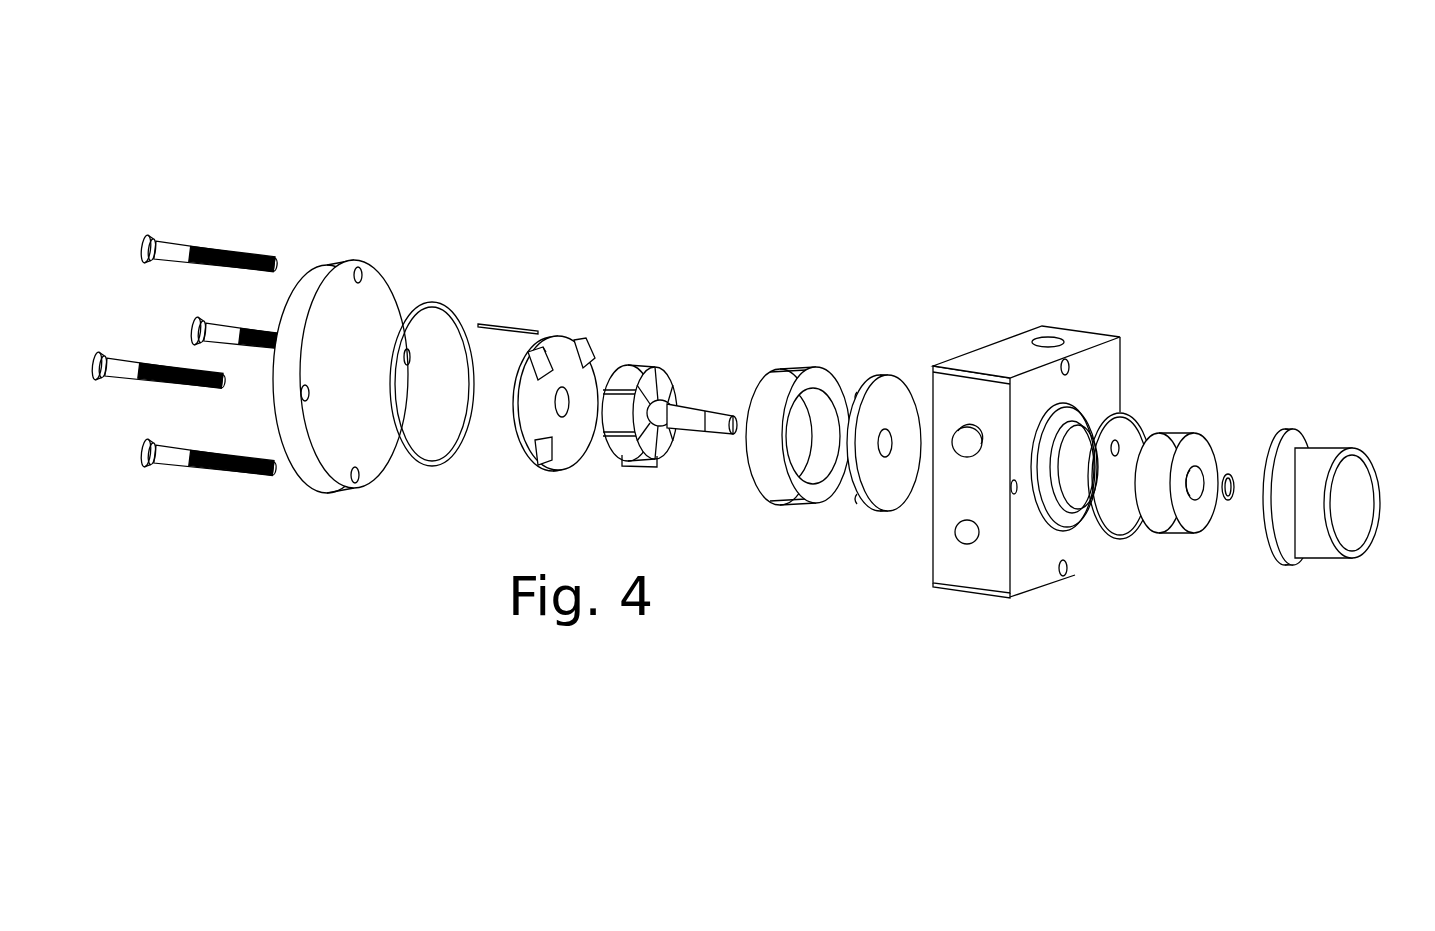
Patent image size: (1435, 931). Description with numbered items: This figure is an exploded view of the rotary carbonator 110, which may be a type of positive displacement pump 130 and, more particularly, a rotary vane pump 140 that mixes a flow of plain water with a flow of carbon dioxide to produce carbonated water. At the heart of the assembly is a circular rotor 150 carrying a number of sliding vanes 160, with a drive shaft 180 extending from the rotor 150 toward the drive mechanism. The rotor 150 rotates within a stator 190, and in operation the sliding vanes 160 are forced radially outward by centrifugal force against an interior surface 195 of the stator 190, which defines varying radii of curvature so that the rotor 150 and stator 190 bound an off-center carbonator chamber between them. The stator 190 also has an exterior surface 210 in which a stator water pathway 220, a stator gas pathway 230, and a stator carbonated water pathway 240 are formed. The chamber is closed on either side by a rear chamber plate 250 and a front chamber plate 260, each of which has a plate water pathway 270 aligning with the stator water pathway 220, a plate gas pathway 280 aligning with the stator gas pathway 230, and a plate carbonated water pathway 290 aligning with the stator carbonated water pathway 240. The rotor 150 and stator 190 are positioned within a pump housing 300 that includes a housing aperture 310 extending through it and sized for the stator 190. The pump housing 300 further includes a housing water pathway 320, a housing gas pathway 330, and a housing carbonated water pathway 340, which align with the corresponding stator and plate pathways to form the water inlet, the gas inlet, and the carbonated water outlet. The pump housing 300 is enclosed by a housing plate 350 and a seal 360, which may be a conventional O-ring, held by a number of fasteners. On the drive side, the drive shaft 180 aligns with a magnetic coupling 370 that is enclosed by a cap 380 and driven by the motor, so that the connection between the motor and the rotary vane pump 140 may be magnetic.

The rotary carbonator 110 is at (322, 144).
The positive displacement pump 130 is at (1074, 442).
The rotary vane pump 140 is at (1111, 320).
The circular rotor 150 is at (656, 358).
The sliding vanes 160 is at (635, 460).
The drive shaft 180 is at (690, 406).
The stator 190 is at (818, 353).
The interior surface 195 is at (813, 480).
The exterior surface 210 is at (790, 357).
The stator water pathway 220 is at (772, 496).
The stator gas pathway 230 is at (762, 372).
The stator carbonated water pathway 240 is at (840, 385).
The rear chamber plate 250 is at (552, 336).
The front chamber plate 260 is at (900, 377).
The plate water pathway 270 is at (527, 376).
The plate gas pathway 280 is at (540, 458).
The plate carbonated water pathway 290 is at (580, 356).
The pump housing 300 is at (1125, 346).
The housing aperture 310 is at (1065, 528).
The housing water pathway 320 is at (962, 428).
The housing gas pathway 330 is at (963, 520).
The housing carbonated water pathway 340 is at (1035, 342).
The housing plate 350 is at (357, 261).
The seal 360 is at (437, 304).
The magnetic coupling 370 is at (1208, 438).
The cap 380 is at (1340, 446).